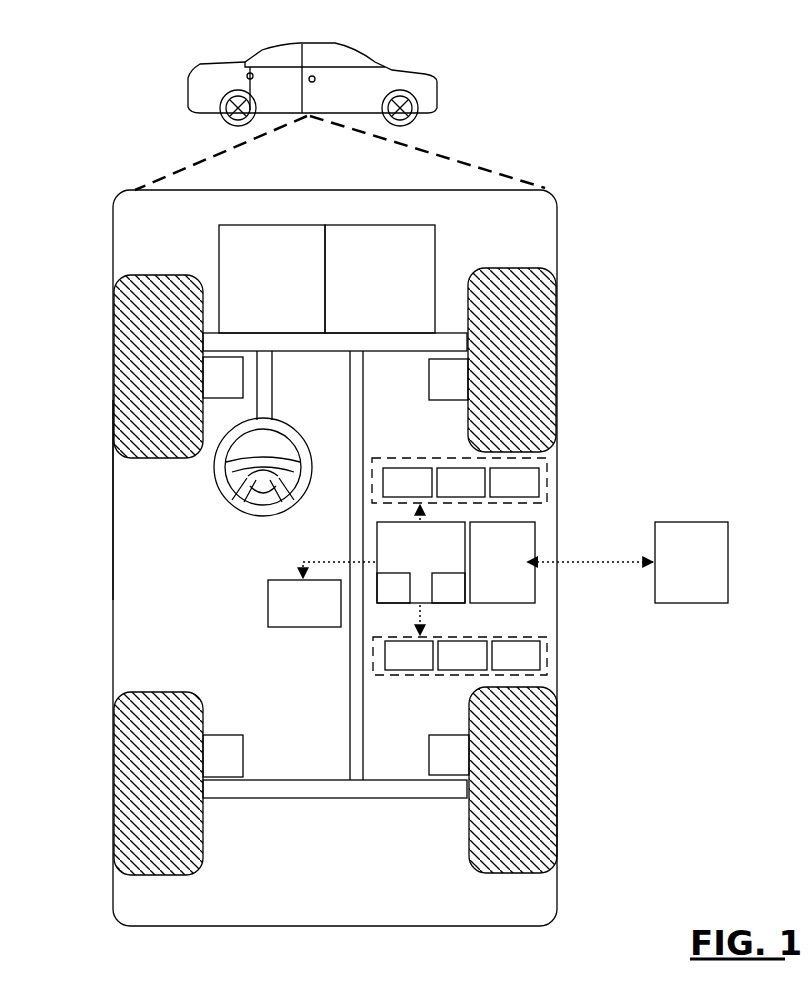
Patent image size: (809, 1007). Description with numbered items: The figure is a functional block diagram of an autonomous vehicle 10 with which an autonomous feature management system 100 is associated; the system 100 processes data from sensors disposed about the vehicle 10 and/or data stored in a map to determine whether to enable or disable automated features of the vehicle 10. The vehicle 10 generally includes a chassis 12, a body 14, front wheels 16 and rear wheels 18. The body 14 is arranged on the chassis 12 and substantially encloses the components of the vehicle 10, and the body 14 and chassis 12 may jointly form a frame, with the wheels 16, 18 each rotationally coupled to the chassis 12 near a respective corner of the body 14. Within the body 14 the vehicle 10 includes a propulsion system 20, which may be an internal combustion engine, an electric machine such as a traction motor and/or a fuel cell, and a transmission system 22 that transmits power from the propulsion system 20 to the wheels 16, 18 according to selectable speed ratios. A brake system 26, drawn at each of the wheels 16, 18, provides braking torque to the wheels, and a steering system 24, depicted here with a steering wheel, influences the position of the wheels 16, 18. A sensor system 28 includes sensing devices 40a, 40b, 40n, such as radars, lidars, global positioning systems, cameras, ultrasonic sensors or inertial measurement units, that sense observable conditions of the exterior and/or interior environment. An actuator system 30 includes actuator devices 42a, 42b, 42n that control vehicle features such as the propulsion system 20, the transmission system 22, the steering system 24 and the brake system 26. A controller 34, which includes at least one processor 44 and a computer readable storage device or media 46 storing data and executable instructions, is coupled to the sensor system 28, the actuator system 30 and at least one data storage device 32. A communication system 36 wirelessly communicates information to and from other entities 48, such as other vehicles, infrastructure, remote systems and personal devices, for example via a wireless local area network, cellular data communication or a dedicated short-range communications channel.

The vehicle 10 is at (185, 93).
The autonomous feature management system 100 is at (578, 204).
The chassis 12 is at (350, 720).
The body 14 is at (112, 545).
The front wheels 16 is at (157, 275).
The rear wheels 18 is at (172, 875).
The propulsion system 20 is at (260, 289).
The transmission system 22 is at (368, 289).
The steering system 24 is at (300, 376).
The brake system 26 is at (211, 388).
The sensor system 28 is at (382, 458).
The actuator system 30 is at (410, 676).
The data storage device 32 is at (292, 613).
The controller 34 is at (409, 570).
The communication system 36 is at (490, 572).
The sensing device 40a is at (391, 492).
The sensing device 40b is at (445, 492).
The sensing device 40n is at (498, 492).
The actuator device 42a is at (393, 665).
The actuator device 42b is at (446, 665).
The actuator device 42n is at (500, 665).
The processor 44 is at (383, 598).
The computer readable storage device or media 46 is at (438, 598).
The other entities 48 is at (679, 572).